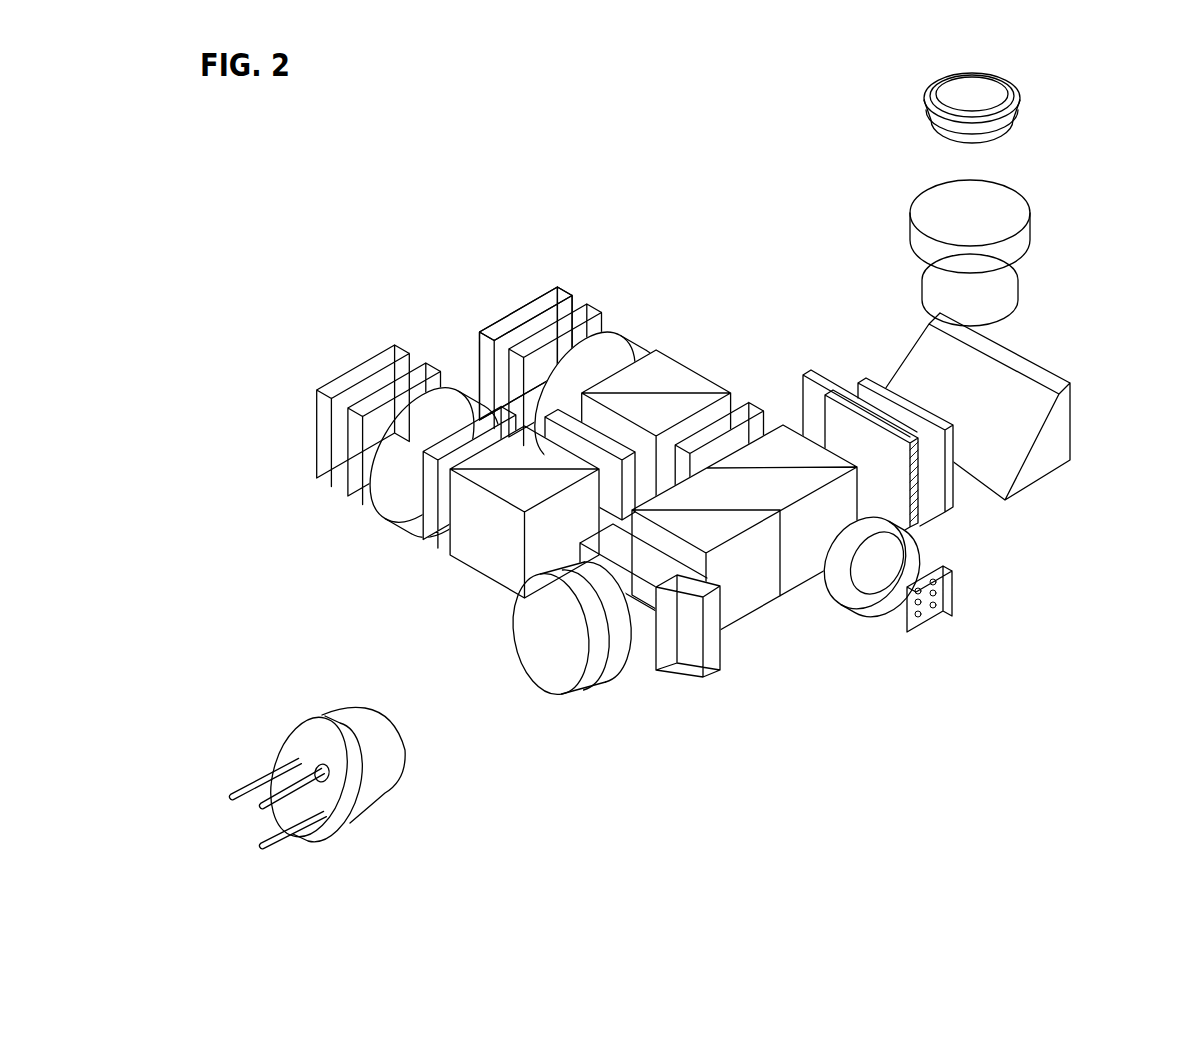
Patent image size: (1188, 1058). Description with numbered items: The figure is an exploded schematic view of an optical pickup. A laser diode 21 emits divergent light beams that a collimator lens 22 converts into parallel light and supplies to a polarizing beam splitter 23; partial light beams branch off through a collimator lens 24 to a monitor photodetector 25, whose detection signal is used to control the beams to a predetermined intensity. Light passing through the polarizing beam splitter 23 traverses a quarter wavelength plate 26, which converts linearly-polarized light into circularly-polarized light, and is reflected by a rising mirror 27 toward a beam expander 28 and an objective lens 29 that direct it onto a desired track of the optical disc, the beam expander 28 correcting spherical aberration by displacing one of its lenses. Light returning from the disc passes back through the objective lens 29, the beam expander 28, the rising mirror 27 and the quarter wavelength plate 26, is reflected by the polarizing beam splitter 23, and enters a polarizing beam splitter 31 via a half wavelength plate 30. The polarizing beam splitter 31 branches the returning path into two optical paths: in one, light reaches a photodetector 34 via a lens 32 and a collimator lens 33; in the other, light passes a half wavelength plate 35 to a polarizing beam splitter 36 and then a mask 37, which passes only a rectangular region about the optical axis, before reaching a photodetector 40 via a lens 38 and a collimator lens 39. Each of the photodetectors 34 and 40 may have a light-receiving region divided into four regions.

The laser diode 21 is at (387, 780).
The collimator lens 22 is at (598, 670).
The polarizing beam splitter 23 is at (778, 514).
The collimator lens 24 is at (872, 592).
The monitor photodetector 25 is at (952, 597).
The ¼ wavelength plate 26 is at (940, 503).
The rising mirror 27 is at (1067, 380).
The beam expander 28 is at (1030, 213).
The objective lens 29 is at (1020, 97).
The λ/2 plate 30 is at (746, 405).
The polarizing beam splitter 31 is at (690, 383).
The lens 32 is at (615, 333).
The collimator lens 33 is at (582, 310).
The photodetector 34 is at (553, 287).
The λ/2 plate 35 is at (470, 337).
The polarizing beam splitter 36 is at (490, 563).
The mask 37 is at (430, 537).
The lens 38 is at (395, 512).
The collimator lens 39 is at (357, 490).
The photodetector 40 is at (325, 475).